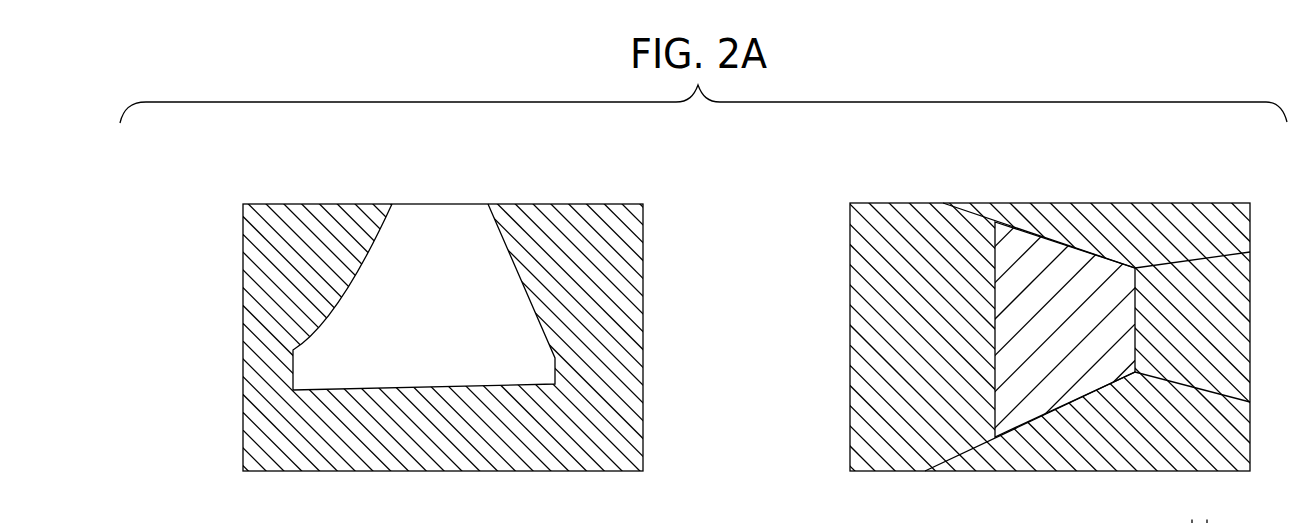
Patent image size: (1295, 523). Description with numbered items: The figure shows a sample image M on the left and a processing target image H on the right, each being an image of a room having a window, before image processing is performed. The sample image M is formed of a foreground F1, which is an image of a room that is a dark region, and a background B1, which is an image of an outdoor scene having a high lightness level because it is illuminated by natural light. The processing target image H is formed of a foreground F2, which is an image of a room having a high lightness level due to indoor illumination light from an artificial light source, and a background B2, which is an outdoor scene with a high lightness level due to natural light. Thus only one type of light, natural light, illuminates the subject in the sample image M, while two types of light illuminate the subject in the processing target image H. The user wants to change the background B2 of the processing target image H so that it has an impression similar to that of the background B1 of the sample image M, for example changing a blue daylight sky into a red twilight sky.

The sample image M is at (595, 204).
The background B1 is at (387, 268).
The foreground F1 is at (258, 403).
The processing target image H is at (1197, 203).
The background B2 is at (1018, 277).
The foreground F2 is at (872, 403).